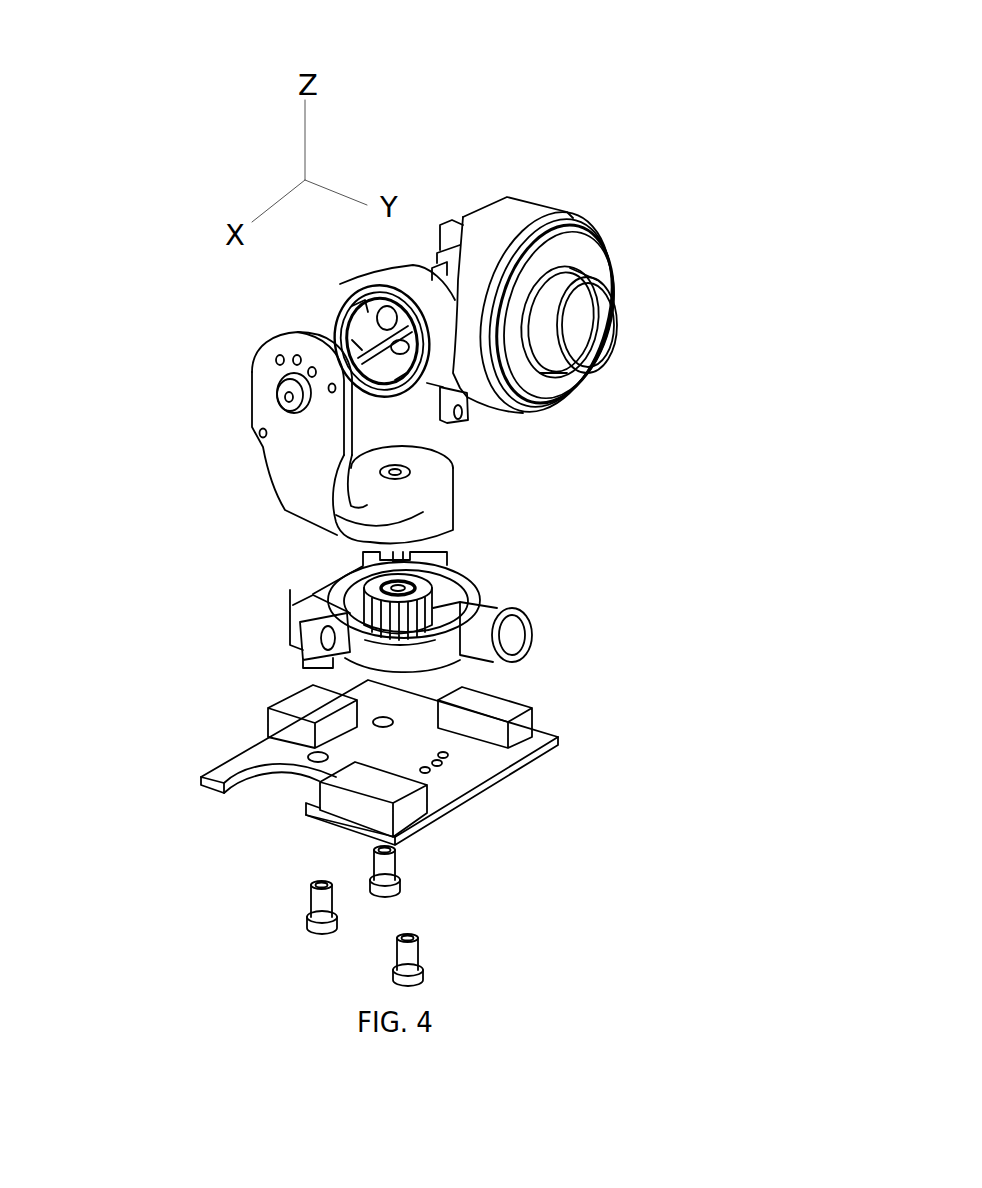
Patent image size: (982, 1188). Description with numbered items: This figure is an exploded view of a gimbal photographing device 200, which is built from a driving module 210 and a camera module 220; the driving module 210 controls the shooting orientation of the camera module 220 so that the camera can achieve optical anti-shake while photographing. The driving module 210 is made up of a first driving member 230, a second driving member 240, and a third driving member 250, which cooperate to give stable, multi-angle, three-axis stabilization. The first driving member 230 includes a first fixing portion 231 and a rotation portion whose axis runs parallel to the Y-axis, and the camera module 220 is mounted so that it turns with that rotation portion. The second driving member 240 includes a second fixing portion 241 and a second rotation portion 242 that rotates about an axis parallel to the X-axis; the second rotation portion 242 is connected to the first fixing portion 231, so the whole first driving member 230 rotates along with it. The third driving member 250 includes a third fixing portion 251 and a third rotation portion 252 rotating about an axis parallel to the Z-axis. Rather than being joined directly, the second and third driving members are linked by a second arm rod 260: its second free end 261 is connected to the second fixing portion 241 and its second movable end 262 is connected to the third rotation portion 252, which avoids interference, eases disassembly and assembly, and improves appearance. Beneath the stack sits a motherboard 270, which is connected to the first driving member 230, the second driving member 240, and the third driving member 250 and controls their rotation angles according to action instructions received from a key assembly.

The gimbal photographing device 200 is at (170, 140).
The driving module 210 is at (333, 577).
The camera module 220 is at (587, 343).
The first driving member 230 is at (512, 236).
The first fixing portion 231 is at (481, 275).
The second driving member 240 is at (420, 293).
The second fixing portion 241 is at (287, 385).
The second rotation portion 242 is at (340, 284).
The third driving member 250 is at (295, 605).
The third fixing portion 251 is at (500, 663).
The third rotation portion 252 is at (455, 602).
The second arm rod 260 is at (287, 465).
The second free end 261 is at (267, 396).
The second movable end 262 is at (450, 513).
The motherboard 270 is at (467, 757).